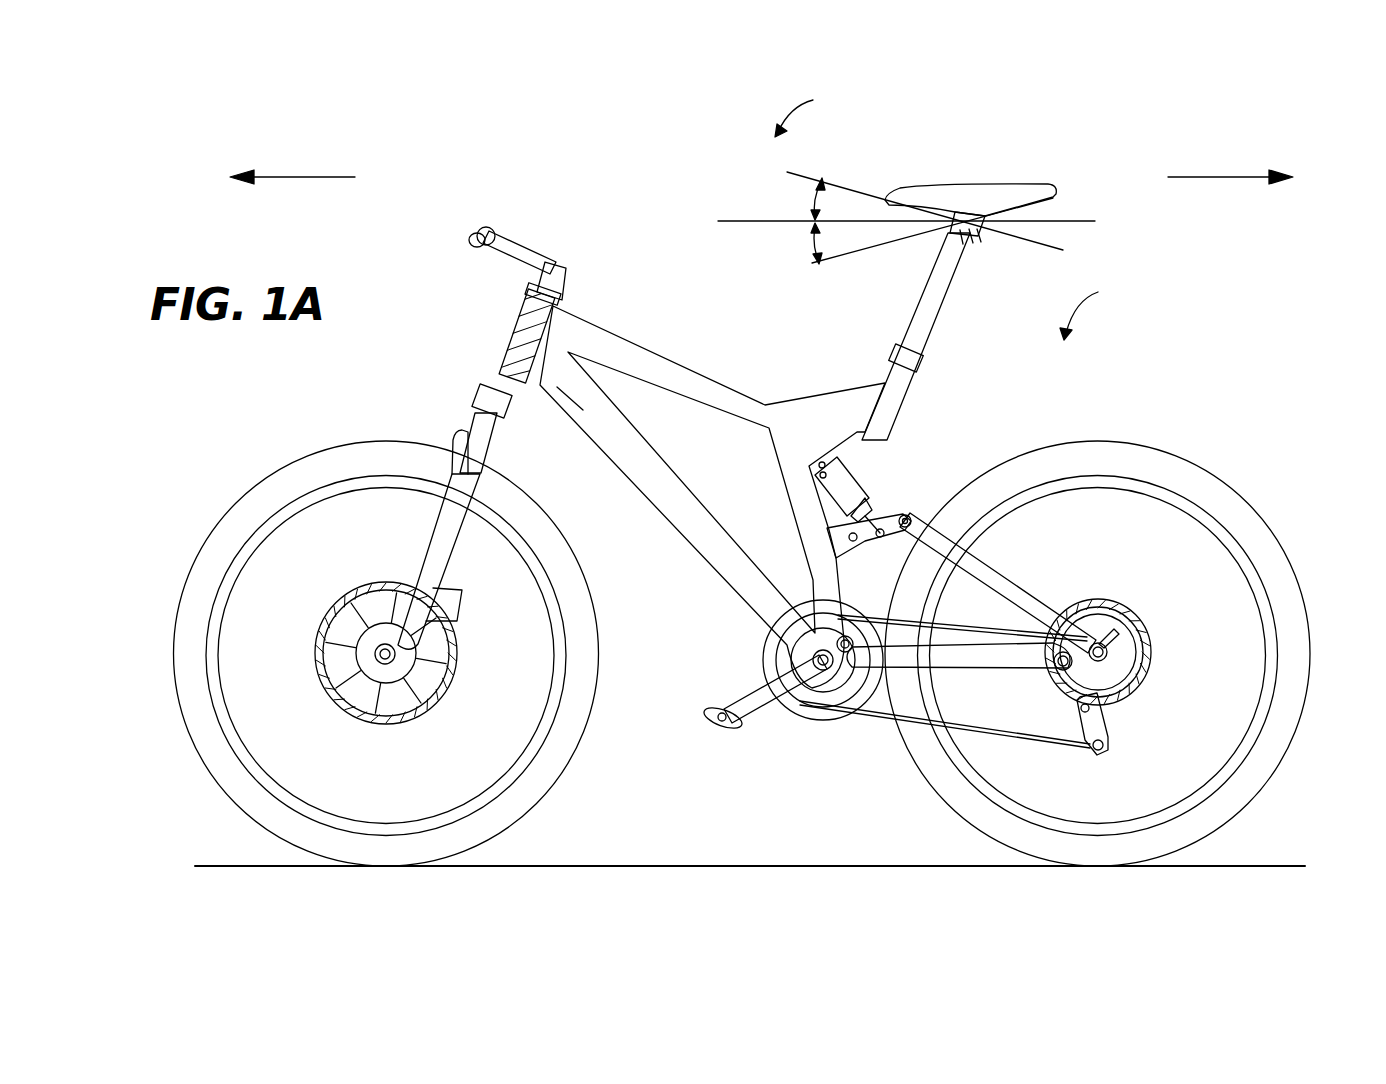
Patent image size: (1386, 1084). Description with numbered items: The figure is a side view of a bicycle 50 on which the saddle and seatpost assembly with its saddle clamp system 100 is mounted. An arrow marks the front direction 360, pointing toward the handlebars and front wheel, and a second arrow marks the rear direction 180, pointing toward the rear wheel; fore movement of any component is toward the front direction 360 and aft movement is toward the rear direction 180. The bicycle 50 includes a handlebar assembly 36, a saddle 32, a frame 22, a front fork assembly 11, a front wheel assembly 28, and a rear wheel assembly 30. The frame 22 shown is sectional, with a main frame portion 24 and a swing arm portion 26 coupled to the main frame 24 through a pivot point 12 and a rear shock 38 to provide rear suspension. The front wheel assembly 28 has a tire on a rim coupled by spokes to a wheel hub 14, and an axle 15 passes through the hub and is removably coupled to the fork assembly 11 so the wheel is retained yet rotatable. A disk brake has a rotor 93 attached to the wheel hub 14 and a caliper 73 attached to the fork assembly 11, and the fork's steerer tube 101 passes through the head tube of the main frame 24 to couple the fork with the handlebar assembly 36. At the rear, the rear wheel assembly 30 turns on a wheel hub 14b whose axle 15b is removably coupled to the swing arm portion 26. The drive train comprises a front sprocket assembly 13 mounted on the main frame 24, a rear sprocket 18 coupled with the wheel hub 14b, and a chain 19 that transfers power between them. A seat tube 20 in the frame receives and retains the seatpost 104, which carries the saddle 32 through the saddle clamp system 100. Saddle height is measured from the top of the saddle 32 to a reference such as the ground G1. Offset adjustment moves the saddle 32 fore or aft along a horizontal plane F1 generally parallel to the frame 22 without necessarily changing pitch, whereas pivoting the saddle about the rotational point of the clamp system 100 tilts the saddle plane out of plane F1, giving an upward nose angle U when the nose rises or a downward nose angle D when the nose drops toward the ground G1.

The front fork assembly 11 is at (482, 395).
The pivot point 12 is at (818, 672).
The front sprocket assembly 13 is at (768, 664).
The wheel hub 14 is at (357, 650).
The axle 15 is at (384, 662).
The rear sprocket 18 is at (1147, 635).
The chain 19 is at (1048, 700).
The seat tube 20 is at (887, 372).
The frame 22 is at (1098, 309).
The main frame portion 24 is at (686, 362).
The swing arm portion 26 is at (996, 585).
The front wheel assembly 28 is at (296, 460).
The rear wheel assembly 30 is at (1272, 522).
The saddle 32 is at (992, 185).
The handlebar assembly 36 is at (473, 228).
The rear shock 38 is at (870, 494).
The bicycle 50 is at (810, 111).
The caliper 73 is at (462, 612).
The rotor 93 is at (340, 600).
The saddle clamp system 100 is at (985, 240).
The steerer tube 101 is at (515, 340).
The seatpost 104 is at (913, 317).
The wheel hub 14b is at (1108, 655).
The axle 15b is at (1147, 667).
The front direction 360 is at (288, 173).
The rear direction 180 is at (1207, 170).
The plane F1 is at (1086, 220).
The nose angle U is at (812, 200).
The nose angle D is at (810, 247).
The ground G1 is at (570, 866).